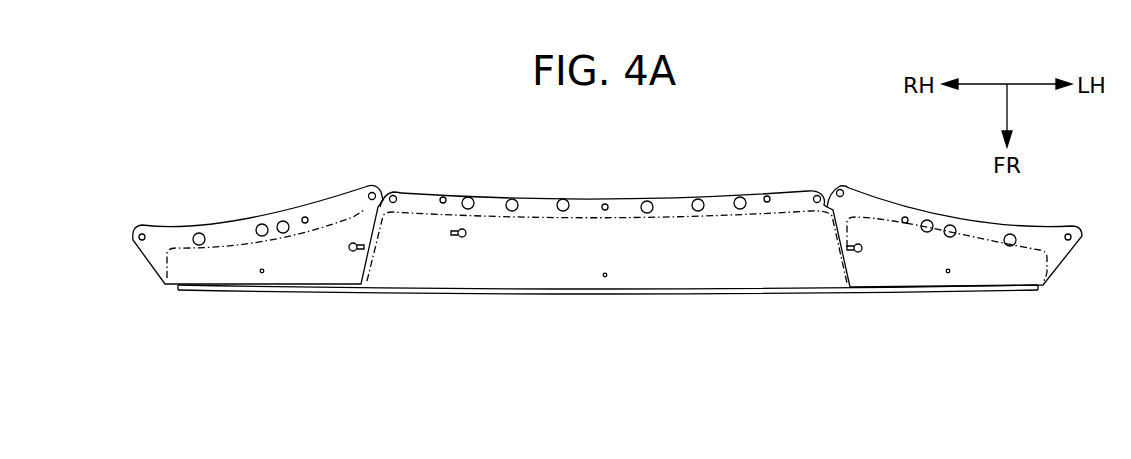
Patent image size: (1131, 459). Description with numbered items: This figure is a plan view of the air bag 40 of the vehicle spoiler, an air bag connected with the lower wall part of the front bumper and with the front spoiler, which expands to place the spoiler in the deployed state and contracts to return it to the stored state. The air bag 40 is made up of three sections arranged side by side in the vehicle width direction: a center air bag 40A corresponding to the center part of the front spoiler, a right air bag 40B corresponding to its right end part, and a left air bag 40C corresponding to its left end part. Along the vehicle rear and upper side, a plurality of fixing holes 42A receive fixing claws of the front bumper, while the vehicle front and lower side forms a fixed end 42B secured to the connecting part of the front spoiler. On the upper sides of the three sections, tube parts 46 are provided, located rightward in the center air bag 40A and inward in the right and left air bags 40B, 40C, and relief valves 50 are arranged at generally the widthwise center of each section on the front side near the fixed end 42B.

The air bag 40 is at (608, 328).
The center air bag 40A is at (607, 254).
The right air bag 40B is at (322, 263).
The left air bag 40C is at (1002, 272).
The fixing holes 42A is at (575, 192).
The fixed end 42B is at (752, 292).
The tube parts 46 is at (353, 244).
The relief valves 50 is at (262, 273).